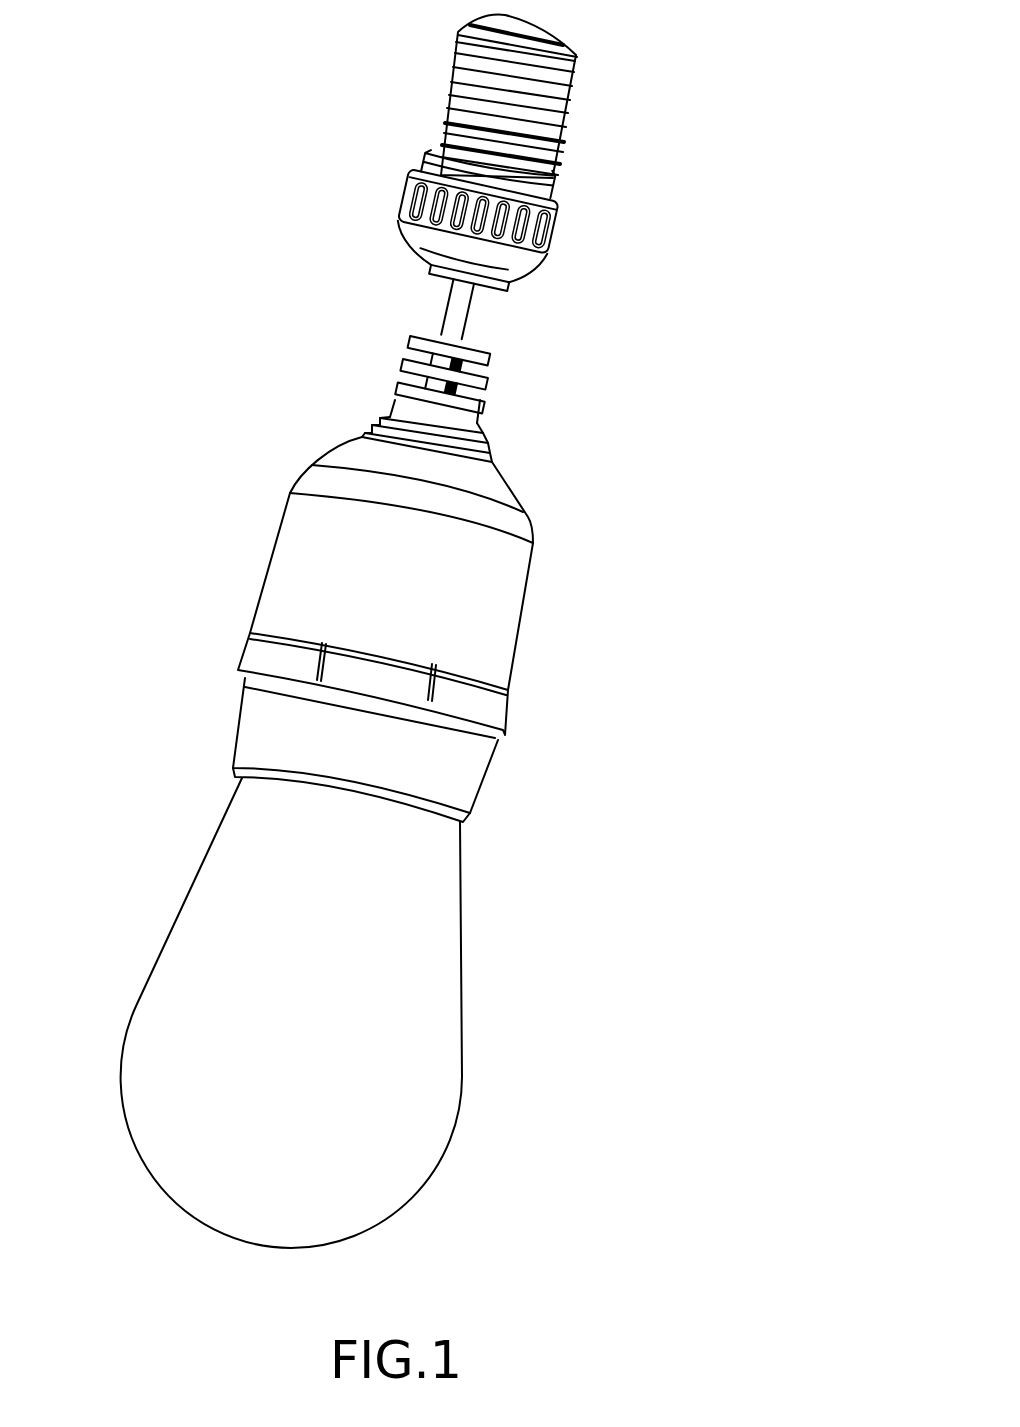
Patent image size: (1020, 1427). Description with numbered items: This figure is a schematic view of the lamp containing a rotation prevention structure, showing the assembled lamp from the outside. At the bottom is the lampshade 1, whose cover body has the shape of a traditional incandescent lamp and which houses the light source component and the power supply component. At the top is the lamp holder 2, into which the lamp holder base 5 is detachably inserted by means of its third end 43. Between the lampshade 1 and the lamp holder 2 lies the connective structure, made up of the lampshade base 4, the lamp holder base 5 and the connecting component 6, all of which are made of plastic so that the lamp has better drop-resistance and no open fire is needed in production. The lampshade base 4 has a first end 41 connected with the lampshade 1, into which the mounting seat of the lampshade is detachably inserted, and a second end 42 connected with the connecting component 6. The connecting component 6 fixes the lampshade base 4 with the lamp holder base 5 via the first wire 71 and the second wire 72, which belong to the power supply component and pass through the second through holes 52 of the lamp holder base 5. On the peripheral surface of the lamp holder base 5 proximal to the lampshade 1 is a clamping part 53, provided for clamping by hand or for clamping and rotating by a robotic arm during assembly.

The lampshade 1 is at (423, 1117).
The lamp holder 2 is at (583, 73).
The lampshade base 4 is at (475, 640).
The first end 41 is at (470, 814).
The second end 42 is at (500, 468).
The third end 43 is at (423, 155).
The lamp holder base 5 is at (495, 283).
The second through holes 52 is at (470, 290).
The clamping part 53 is at (560, 220).
The connecting component 6 is at (470, 383).
The first wire 71 is at (457, 313).
The second wire 72 is at (410, 343).